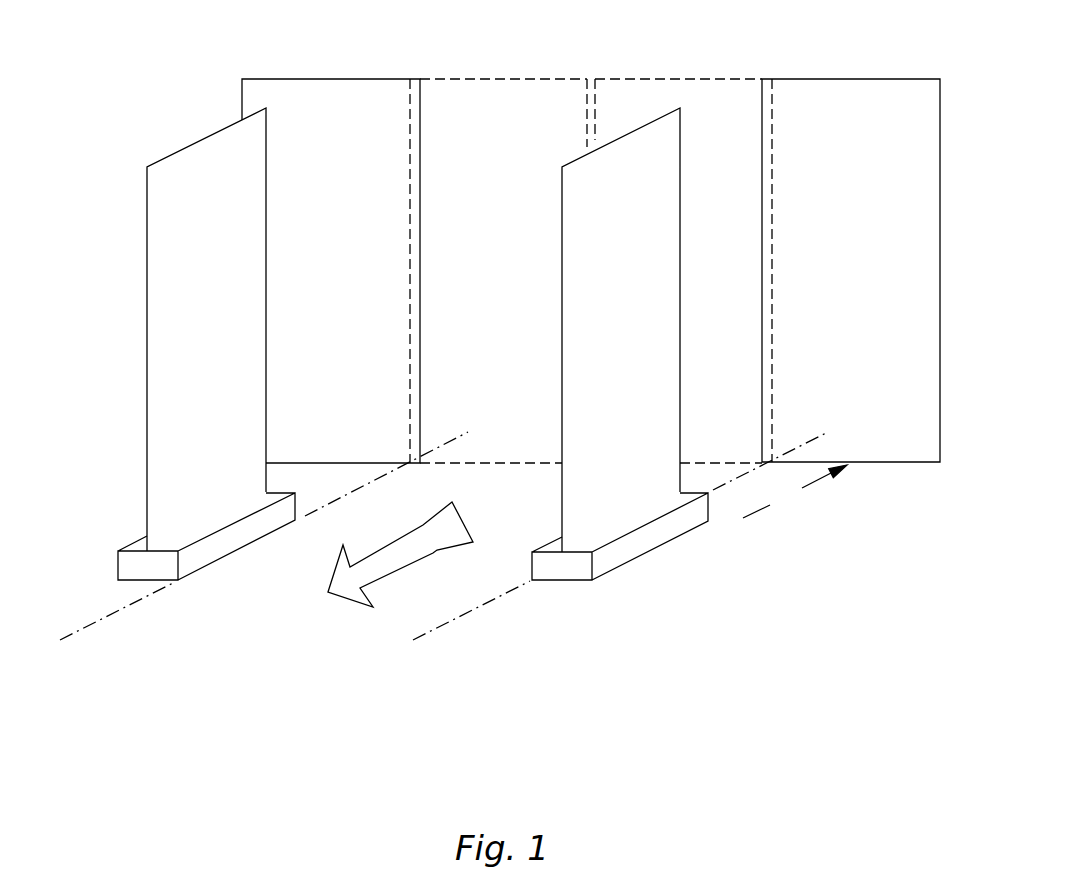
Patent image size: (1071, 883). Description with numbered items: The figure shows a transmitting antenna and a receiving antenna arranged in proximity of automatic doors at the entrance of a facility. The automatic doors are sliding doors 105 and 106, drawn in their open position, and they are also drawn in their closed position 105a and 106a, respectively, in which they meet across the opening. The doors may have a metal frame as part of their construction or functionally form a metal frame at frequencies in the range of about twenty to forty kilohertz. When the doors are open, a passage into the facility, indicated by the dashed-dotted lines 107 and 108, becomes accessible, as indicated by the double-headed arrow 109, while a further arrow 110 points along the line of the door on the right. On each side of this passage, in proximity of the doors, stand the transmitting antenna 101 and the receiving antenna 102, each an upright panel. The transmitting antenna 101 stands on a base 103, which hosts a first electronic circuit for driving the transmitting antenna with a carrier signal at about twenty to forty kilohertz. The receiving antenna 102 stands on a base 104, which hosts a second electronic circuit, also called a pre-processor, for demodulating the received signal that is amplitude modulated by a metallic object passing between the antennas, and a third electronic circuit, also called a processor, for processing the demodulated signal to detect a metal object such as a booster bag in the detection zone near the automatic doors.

The transmitting antenna 101 is at (224, 386).
The receiving antenna 102 is at (652, 386).
The base 103 is at (137, 572).
The base 104 is at (650, 542).
The sliding door 105 is at (356, 262).
The sliding door 106 is at (889, 263).
The closed position 105a is at (438, 79).
The closed position 106a is at (630, 79).
The dashed-dotted line 107 is at (85, 627).
The dashed-dotted line 108 is at (438, 623).
The arrow 109 is at (370, 568).
The direction arrow 110 is at (825, 517).